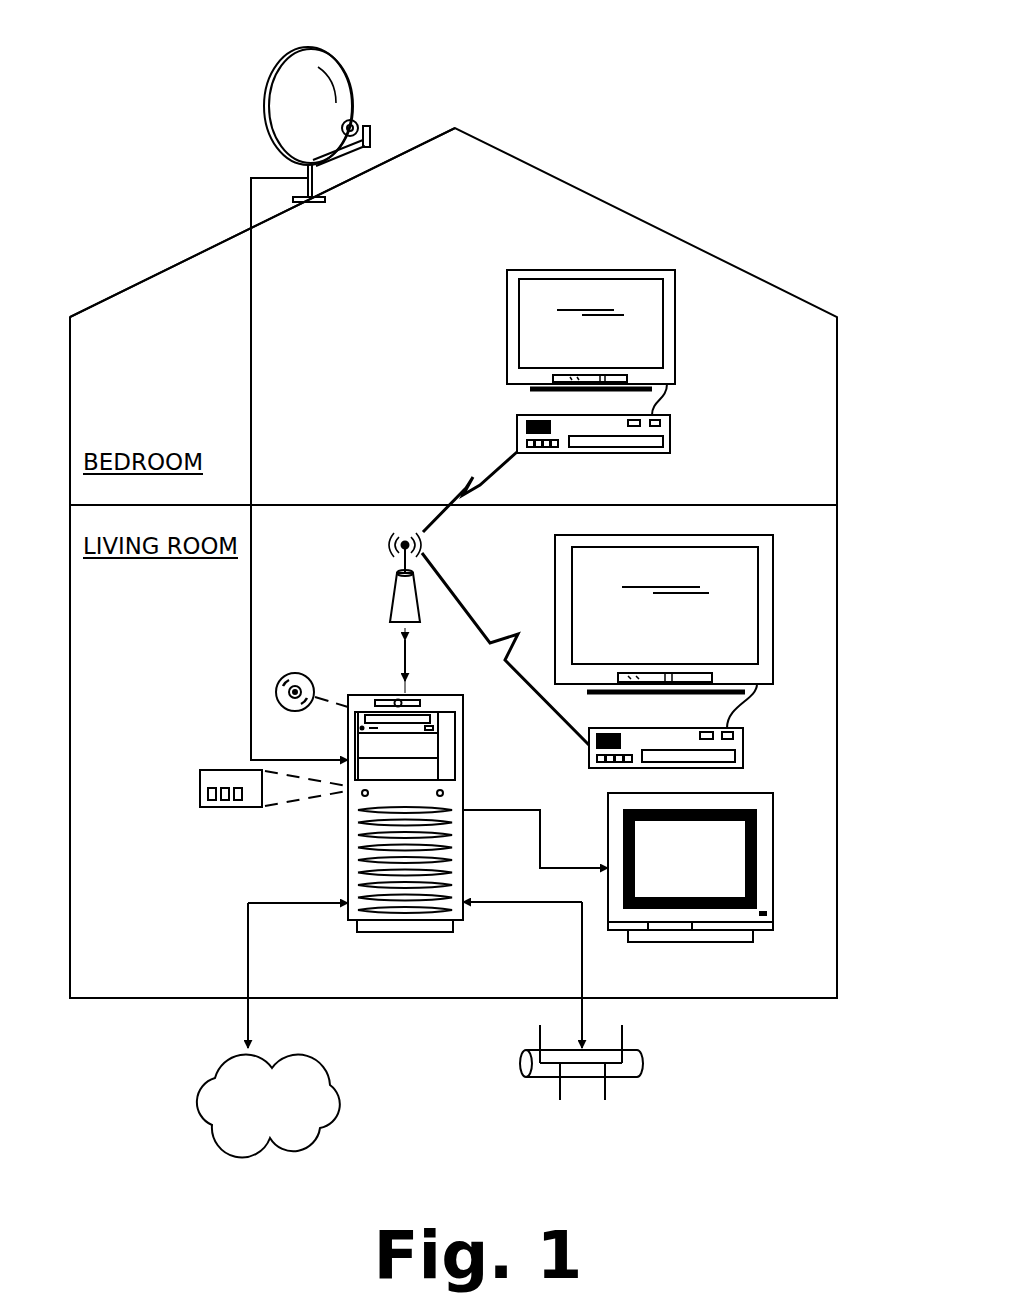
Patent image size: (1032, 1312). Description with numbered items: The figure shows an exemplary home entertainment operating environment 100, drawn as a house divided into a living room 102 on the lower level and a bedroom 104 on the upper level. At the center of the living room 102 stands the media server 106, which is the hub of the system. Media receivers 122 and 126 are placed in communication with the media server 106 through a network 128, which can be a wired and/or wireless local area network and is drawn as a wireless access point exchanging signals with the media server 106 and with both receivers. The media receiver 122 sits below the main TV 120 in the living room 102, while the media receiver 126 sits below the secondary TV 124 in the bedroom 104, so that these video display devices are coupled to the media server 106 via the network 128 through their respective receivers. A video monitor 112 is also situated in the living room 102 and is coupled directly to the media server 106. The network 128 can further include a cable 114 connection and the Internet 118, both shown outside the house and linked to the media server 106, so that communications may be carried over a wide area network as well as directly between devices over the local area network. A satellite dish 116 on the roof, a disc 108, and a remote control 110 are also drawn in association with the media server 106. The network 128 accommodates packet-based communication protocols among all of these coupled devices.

The home entertainment operating environment 100 is at (668, 134).
The living room 102 is at (757, 998).
The bedroom 104 is at (212, 246).
The media server 106 is at (373, 693).
The optical disc 108 is at (287, 672).
The remote control 110 is at (200, 788).
The video monitor 112 is at (773, 868).
The cable 114 is at (643, 1062).
The satellite dish 116 is at (293, 70).
The Internet 118 is at (190, 1103).
The main TV 120 is at (773, 615).
The media receiver 122 is at (743, 750).
The secondary TV 124 is at (577, 268).
The media receiver 126 is at (672, 442).
The network 128 is at (393, 593).